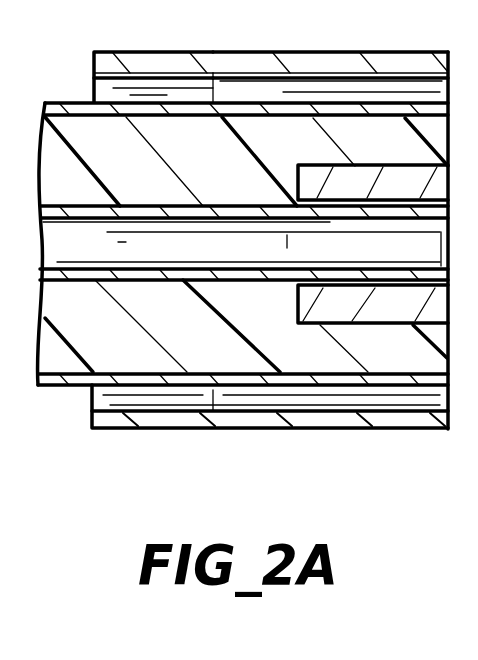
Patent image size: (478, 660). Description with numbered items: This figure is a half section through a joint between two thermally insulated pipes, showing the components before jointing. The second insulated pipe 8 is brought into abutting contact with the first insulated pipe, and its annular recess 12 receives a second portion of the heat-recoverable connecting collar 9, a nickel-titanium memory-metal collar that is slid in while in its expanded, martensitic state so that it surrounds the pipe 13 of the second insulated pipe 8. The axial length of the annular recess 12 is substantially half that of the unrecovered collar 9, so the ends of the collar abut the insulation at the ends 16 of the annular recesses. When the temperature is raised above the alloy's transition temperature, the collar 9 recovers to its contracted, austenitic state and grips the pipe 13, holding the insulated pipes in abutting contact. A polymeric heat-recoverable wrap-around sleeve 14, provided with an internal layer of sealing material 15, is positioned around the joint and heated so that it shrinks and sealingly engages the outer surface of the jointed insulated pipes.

The second insulated pipe 8 is at (421, 441).
The heat-recoverable connecting collar 9 is at (352, 312).
The annular recess 12 is at (357, 198).
The pipe 13 is at (160, 383).
The polymeric heat-recoverable wrap-around sleeve 14 is at (252, 65).
The internal layer of sealing material 15 is at (141, 73).
The ends of the annular recesses 16 is at (288, 250).